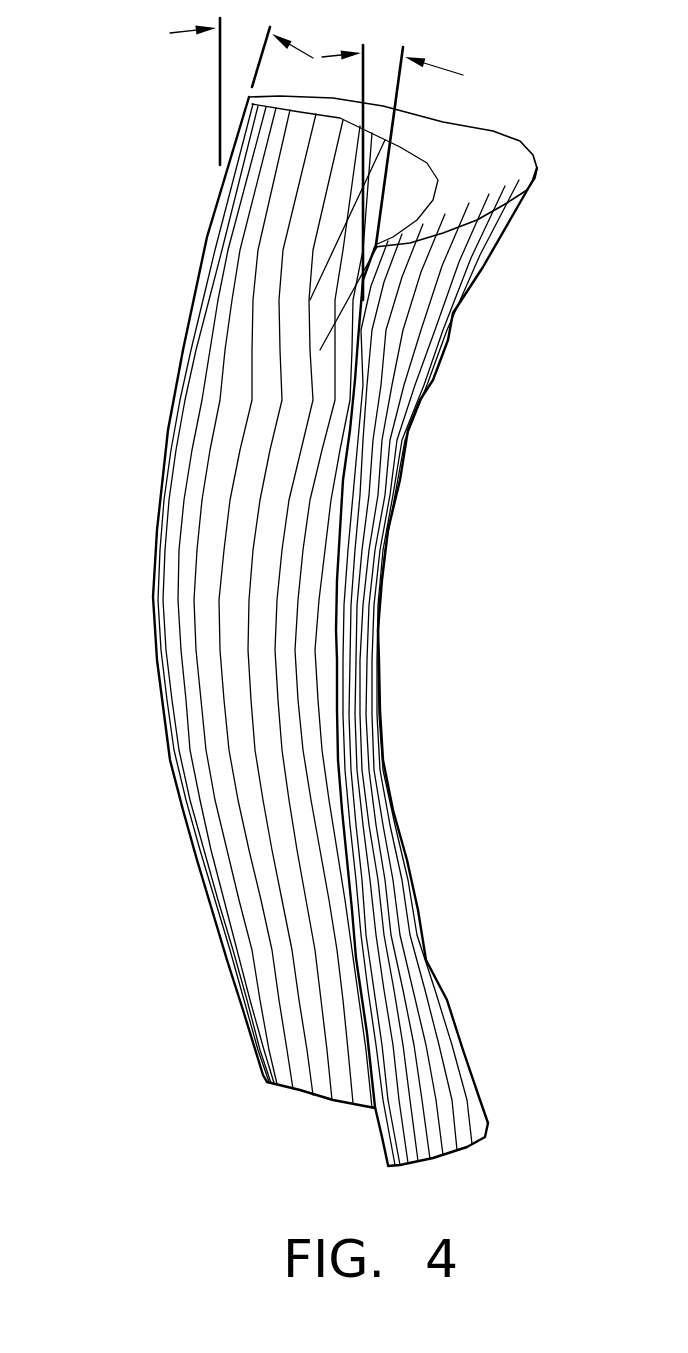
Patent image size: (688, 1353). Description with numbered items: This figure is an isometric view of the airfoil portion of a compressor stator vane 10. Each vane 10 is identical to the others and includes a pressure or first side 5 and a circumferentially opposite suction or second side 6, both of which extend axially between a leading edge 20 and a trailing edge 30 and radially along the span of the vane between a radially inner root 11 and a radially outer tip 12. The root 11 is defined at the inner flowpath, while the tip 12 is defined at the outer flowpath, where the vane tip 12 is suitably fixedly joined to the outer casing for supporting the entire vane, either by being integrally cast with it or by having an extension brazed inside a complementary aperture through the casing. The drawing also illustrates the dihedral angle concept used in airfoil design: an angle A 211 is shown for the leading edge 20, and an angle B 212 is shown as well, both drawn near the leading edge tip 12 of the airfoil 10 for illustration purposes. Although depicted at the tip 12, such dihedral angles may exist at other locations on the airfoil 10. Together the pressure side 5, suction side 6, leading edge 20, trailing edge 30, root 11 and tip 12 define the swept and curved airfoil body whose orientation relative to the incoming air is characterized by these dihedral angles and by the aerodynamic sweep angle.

The pressure or first side 5 is at (287, 212).
The suction or second side 6 is at (462, 307).
The stator vane 10 is at (210, 588).
The root 11 is at (474, 1142).
The tip 12 is at (488, 153).
The leading edge 20 is at (168, 422).
The trailing edge 30 is at (343, 607).
The angle A 211 is at (240, 58).
The angle B 212 is at (383, 80).